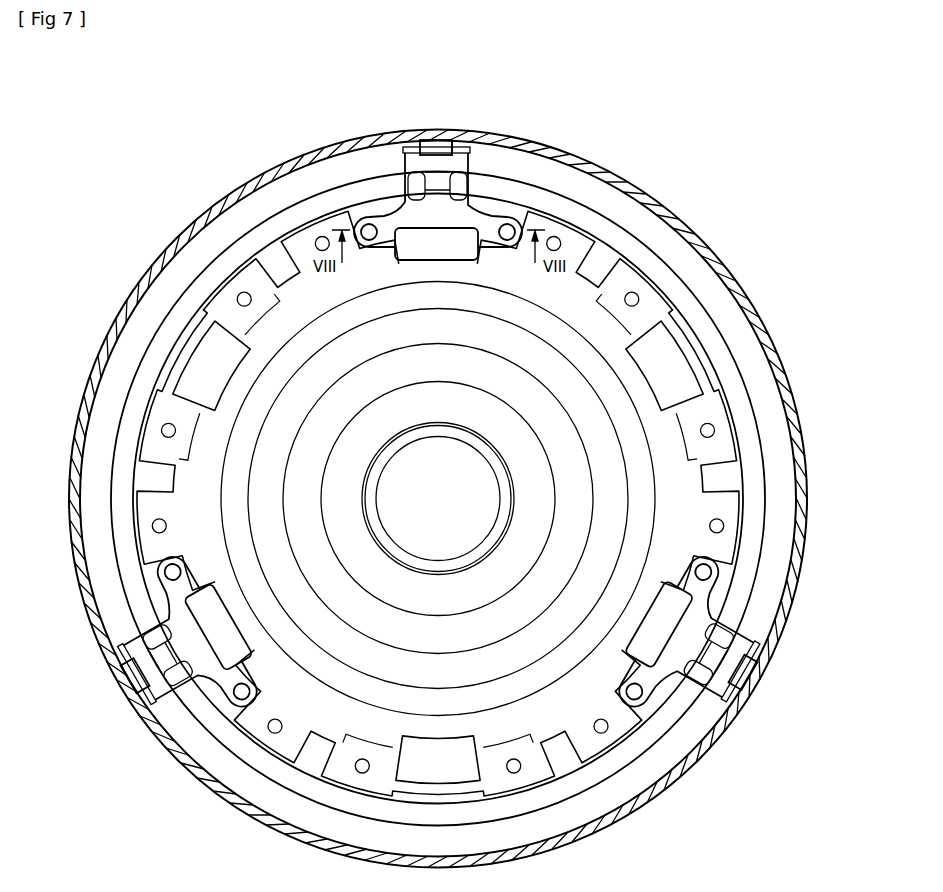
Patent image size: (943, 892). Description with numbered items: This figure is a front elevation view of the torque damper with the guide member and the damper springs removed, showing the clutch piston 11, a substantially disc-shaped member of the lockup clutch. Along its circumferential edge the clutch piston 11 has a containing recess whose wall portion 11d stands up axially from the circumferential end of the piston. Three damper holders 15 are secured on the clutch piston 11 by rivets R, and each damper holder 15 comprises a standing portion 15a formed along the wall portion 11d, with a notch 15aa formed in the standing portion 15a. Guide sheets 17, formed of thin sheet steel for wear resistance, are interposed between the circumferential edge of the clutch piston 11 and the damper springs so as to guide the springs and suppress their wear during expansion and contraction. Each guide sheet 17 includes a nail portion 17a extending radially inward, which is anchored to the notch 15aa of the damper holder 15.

The clutch piston 11 is at (633, 187).
The wall portion 11d is at (712, 238).
The damper holder 15 is at (471, 221).
The standing portion 15a is at (410, 148).
The notch 15aa is at (455, 147).
The guide sheet 17 is at (722, 314).
The nail portion 17a is at (436, 140).
The rivet R is at (363, 220).